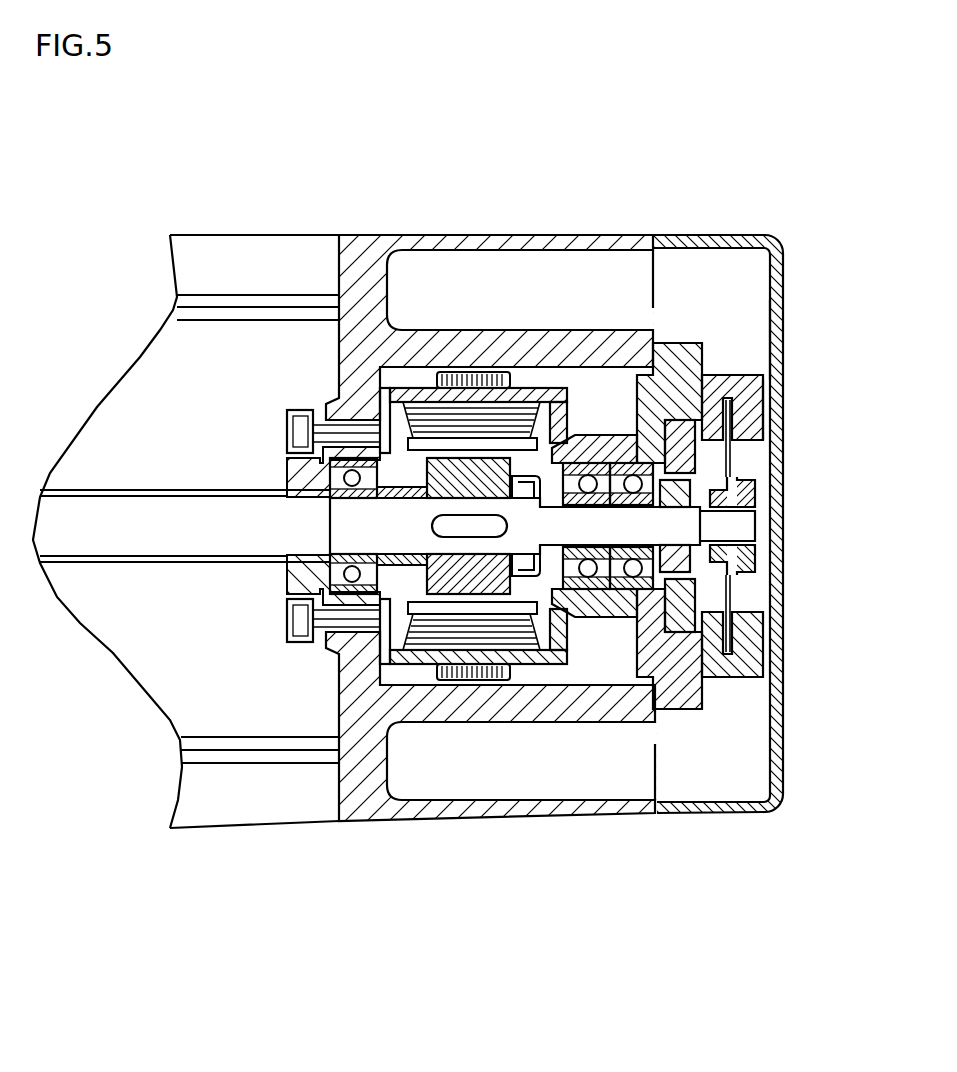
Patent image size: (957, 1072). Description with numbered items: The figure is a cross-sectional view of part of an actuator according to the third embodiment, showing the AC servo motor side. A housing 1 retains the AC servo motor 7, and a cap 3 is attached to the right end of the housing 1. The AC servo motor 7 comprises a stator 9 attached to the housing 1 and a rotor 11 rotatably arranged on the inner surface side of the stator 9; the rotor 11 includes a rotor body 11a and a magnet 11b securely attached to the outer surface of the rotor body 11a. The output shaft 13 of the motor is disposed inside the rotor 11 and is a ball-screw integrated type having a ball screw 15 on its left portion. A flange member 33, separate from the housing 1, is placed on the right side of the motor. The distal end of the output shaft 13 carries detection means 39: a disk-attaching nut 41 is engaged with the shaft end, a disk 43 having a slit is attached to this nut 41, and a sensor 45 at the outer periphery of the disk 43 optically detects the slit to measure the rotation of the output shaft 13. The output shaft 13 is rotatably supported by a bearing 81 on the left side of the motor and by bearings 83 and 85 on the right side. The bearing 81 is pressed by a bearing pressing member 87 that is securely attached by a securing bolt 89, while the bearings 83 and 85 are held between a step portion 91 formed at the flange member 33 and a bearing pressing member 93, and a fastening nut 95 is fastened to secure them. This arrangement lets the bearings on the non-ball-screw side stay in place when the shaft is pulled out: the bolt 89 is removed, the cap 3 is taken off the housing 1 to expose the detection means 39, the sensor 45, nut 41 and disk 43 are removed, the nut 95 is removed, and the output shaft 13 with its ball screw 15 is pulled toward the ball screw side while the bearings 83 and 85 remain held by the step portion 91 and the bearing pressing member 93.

The housing 1 is at (386, 235).
The cap 3 is at (758, 465).
The AC servo motor 7 is at (583, 386).
The stator 9 is at (525, 382).
The rotor 11 is at (427, 577).
The rotor body 11a is at (345, 598).
The magnet 11b is at (463, 598).
The output shaft 13 is at (340, 543).
The ball screw 15 is at (152, 557).
The flange member 33 is at (690, 598).
The detection means 39 is at (771, 450).
The disk-attaching nut 41 is at (757, 560).
The disk 43 is at (776, 344).
The sensor 45 is at (735, 395).
The bearing 81 is at (335, 603).
The bearing 83 is at (588, 583).
The bearing 85 is at (622, 582).
The bearing pressing member 87 is at (330, 592).
The securing bolt 89 is at (288, 420).
The step portion 91 is at (565, 452).
The bearing pressing member 93 is at (695, 590).
The fastening nut 95 is at (745, 500).